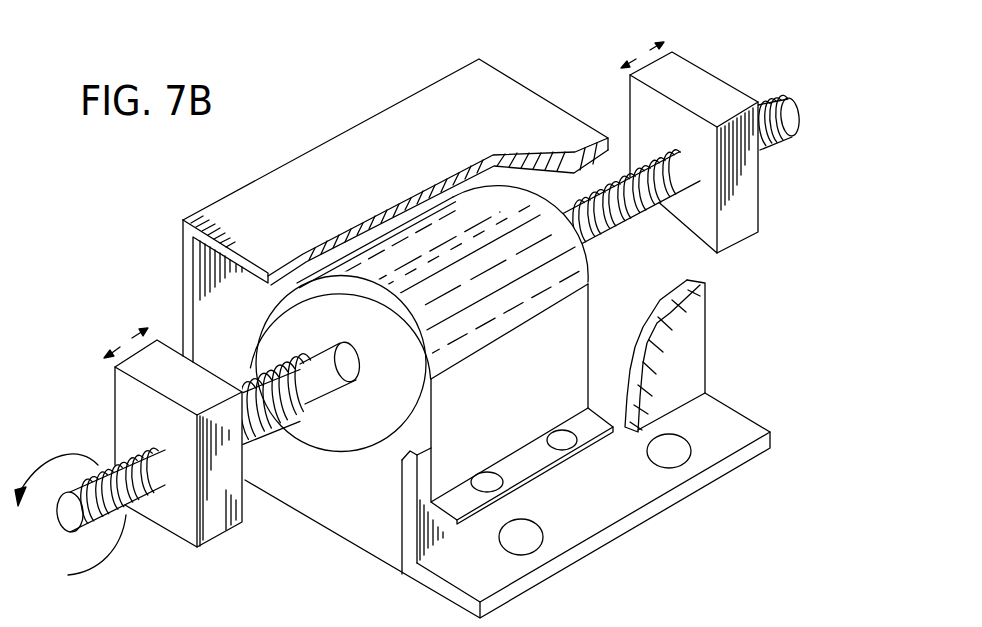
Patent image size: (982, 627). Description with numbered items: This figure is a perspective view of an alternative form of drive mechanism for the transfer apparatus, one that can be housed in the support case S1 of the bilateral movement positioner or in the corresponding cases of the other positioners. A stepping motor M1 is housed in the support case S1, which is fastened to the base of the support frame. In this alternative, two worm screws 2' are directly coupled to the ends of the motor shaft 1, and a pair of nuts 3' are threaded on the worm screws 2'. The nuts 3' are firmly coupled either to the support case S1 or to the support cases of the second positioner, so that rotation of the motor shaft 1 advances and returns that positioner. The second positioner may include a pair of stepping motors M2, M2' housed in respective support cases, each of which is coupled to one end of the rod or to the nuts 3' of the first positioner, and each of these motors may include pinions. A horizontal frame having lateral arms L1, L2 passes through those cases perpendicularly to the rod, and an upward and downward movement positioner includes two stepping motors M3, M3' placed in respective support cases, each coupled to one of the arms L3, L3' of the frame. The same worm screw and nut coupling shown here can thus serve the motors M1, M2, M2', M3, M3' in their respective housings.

The support case S1 is at (183, 242).
The worm screws 2' is at (424, 332).
The nuts 3' is at (438, 315).
The motor shaft 1 is at (335, 370).
The stepping motor M1 is at (362, 430).
The stepping motor M2 is at (406, 357).
The stepping motor M2' is at (449, 358).
The stepping motor M3 is at (436, 376).
The stepping motor M3' is at (467, 384).
The lateral arm L1 is at (775, 169).
The lateral arm L2 is at (796, 165).
The arm L3 is at (779, 161).
The arm L3' is at (803, 158).